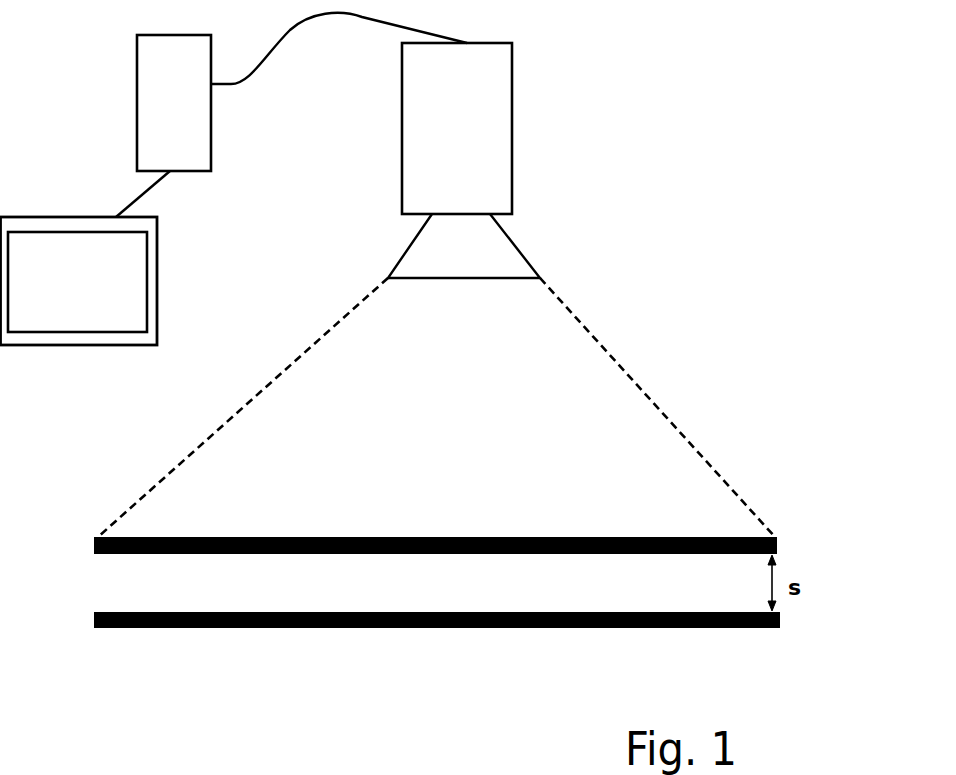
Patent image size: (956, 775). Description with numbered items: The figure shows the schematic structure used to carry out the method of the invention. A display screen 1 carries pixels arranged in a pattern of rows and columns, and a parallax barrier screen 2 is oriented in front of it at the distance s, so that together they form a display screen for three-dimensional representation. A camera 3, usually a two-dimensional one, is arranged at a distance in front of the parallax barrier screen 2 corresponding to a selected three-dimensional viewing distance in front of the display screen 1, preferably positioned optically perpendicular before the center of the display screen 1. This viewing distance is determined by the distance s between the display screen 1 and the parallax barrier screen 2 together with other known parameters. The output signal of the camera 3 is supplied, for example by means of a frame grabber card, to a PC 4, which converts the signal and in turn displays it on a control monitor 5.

The display screen 1 is at (780, 620).
The parallax barrier screen 2 is at (777, 545).
The camera 3 is at (512, 108).
The PC 4 is at (137, 92).
The control monitor 5 is at (157, 251).